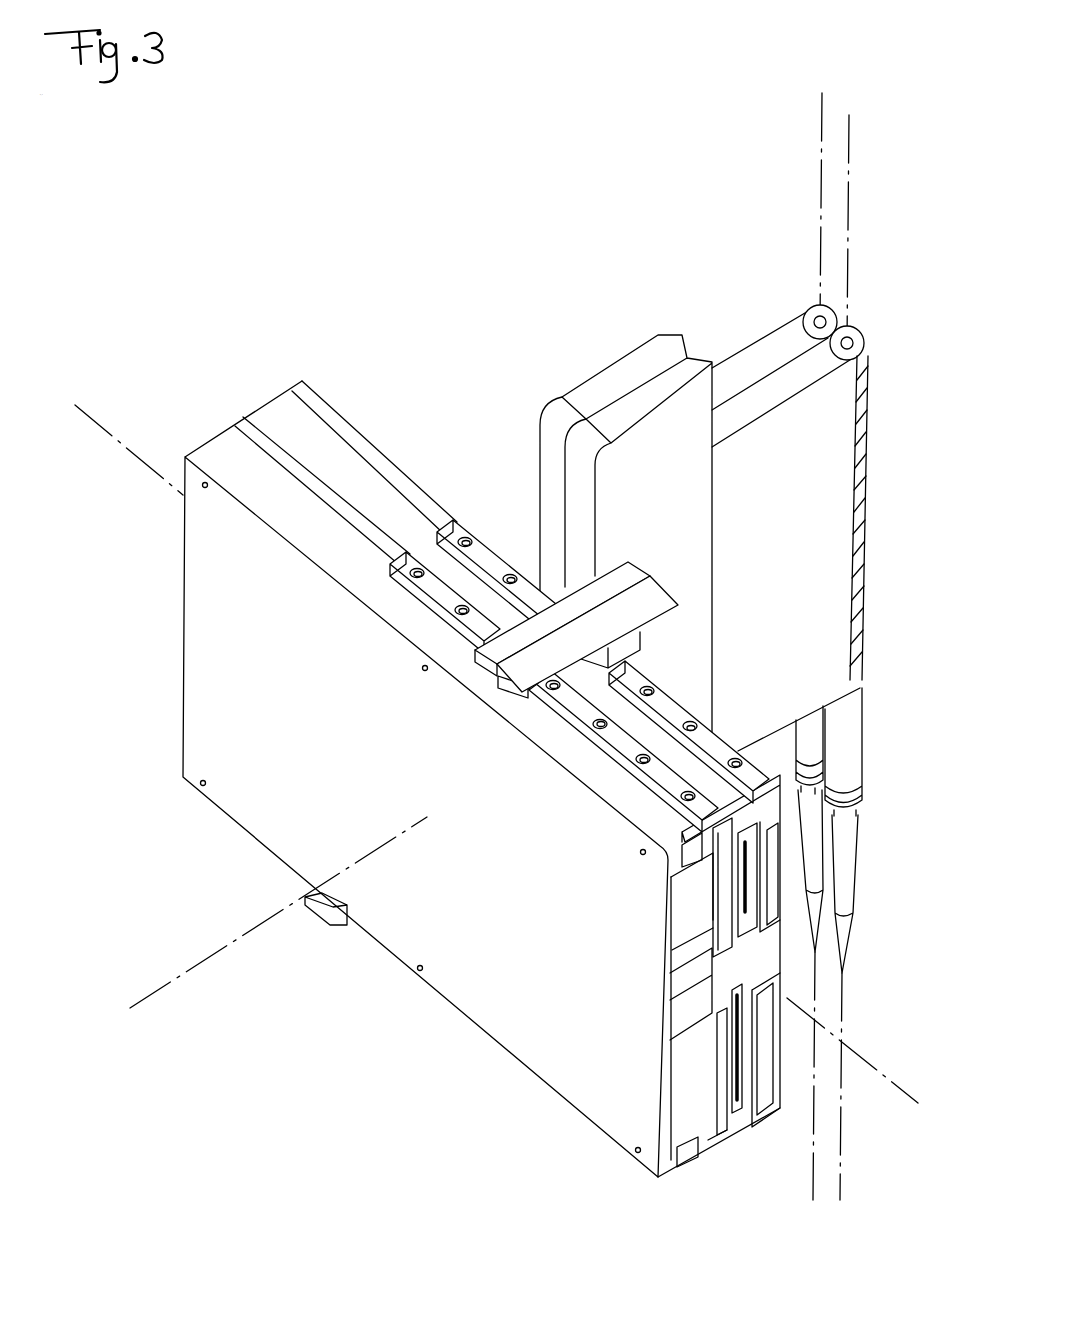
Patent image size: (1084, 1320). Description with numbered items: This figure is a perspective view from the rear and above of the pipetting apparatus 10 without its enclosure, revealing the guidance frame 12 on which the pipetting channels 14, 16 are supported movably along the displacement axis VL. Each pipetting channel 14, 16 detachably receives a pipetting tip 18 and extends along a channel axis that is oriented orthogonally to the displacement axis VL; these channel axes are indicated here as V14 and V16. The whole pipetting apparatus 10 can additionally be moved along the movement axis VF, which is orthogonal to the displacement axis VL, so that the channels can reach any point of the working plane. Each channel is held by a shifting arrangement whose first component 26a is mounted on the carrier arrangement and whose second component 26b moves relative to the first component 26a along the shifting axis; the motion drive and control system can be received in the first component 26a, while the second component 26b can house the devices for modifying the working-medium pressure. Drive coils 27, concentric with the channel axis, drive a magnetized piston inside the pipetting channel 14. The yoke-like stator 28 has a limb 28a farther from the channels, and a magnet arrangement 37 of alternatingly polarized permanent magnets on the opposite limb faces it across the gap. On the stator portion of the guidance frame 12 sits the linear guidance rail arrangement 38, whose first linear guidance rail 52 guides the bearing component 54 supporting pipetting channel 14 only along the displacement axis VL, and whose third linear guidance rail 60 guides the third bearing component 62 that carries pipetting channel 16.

The pipetting apparatus 10 is at (414, 186).
The guidance frame 12 is at (527, 1035).
The pipetting channel 14 is at (848, 745).
The pipetting channel 16 is at (808, 318).
The pipetting tip 18 is at (848, 865).
The first component 26a is at (676, 518).
The second component 26b is at (802, 516).
The drive coils 27 is at (866, 604).
The yoke-like stator 28 is at (619, 320).
The yoke limb 28a is at (723, 887).
The magnet arrangement 37 is at (743, 925).
The linear guidance rail arrangement 38 is at (426, 522).
The first linear guidance rail 52 is at (713, 750).
The bearing component 54 is at (630, 640).
The third linear guidance rail 60 is at (618, 736).
The third bearing component 62 is at (520, 677).
The axis of pipetting channel 16 V16 is at (818, 140).
The axis of pipetting channel 14 V14 is at (850, 143).
The displacement axis VL is at (930, 1114).
The movement axis VF is at (148, 995).